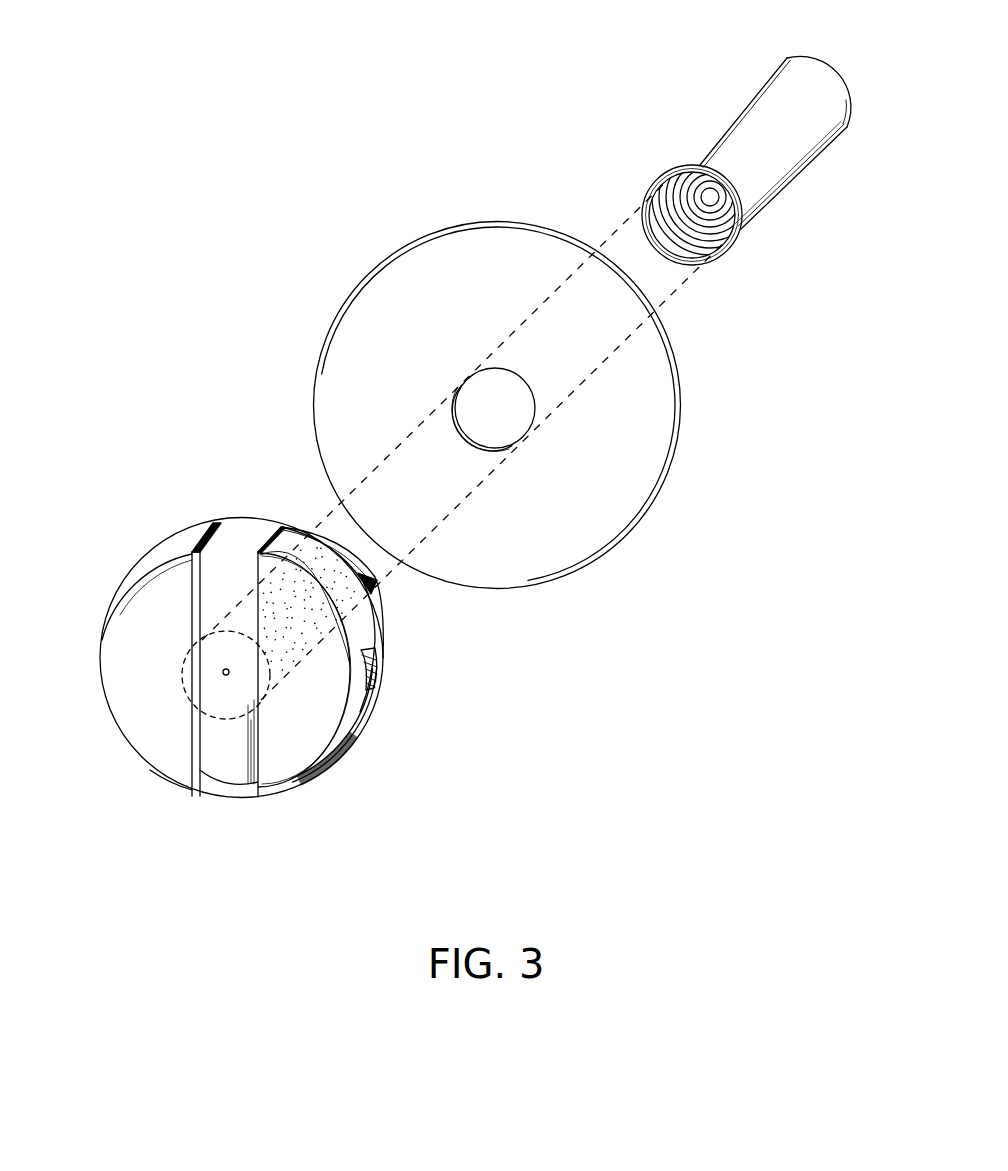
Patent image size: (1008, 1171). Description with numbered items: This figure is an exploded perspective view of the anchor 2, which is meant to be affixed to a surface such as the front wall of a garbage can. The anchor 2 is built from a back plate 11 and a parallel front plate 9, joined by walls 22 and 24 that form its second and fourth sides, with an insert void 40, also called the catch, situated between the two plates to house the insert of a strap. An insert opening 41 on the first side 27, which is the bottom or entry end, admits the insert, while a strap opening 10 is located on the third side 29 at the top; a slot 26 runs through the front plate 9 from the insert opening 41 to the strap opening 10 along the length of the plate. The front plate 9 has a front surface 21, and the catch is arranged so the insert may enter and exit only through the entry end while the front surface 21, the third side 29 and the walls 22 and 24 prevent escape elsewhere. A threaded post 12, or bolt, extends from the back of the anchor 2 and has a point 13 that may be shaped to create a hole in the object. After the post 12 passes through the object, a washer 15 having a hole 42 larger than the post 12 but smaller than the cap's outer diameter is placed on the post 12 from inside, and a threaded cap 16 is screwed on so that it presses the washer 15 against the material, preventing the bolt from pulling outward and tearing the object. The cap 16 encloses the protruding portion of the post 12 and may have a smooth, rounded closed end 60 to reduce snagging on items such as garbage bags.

The anchor 2 is at (230, 212).
The front plate 9 is at (138, 738).
The strap opening 10 is at (238, 545).
The back plate 11 is at (367, 680).
The threaded post 12 is at (330, 530).
The point 13 is at (372, 580).
The washer 15 is at (682, 403).
The threaded cap 16 is at (720, 132).
The front surface 21 is at (134, 709).
The wall 22 is at (178, 547).
The wall 24 is at (362, 632).
The slot 26 is at (192, 633).
The first side 27 is at (160, 782).
The third side 29 is at (203, 530).
The insert void 40 is at (353, 722).
The insert opening 41 is at (248, 788).
The hole 42 is at (532, 428).
The closed end 60 is at (826, 62).